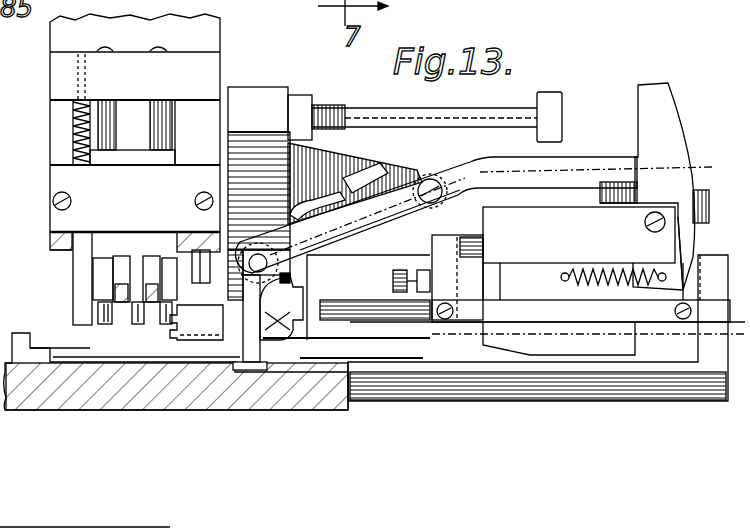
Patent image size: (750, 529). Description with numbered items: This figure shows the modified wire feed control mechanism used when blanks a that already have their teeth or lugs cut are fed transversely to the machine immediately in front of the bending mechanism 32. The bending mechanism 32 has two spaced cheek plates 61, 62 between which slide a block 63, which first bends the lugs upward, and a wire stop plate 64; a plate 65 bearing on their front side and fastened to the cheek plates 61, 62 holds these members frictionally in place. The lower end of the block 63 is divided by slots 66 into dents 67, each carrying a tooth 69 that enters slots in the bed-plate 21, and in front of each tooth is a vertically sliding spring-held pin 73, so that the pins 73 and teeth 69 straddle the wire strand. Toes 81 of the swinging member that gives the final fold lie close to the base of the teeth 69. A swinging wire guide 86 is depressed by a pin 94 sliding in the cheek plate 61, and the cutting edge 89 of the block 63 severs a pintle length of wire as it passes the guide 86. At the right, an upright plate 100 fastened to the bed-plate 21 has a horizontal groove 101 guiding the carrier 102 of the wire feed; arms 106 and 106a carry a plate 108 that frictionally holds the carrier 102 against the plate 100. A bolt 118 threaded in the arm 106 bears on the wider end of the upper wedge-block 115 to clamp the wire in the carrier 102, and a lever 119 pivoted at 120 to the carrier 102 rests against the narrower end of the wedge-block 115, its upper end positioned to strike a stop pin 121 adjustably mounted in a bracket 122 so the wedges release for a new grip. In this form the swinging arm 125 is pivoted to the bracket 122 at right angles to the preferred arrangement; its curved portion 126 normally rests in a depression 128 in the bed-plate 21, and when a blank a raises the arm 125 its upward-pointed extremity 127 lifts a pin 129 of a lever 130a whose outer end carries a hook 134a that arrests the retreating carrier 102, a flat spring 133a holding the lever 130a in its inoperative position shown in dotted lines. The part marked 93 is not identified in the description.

The bending mechanism 32 is at (114, 123).
The cheek plate 62 is at (55, 127).
The plunger guides 93 is at (160, 125).
The cheek plate 61 is at (197, 132).
The plate 65 is at (133, 188).
The block 63 is at (95, 242).
The wire stop plate 64 is at (75, 268).
The dents 67 is at (100, 287).
The slots 66 is at (166, 262).
The toes 81 is at (120, 285).
The cutting edge 89 is at (155, 290).
The tooth 69 is at (115, 318).
The vertically sliding pin 73 is at (163, 318).
The swinging wire guide 86 is at (196, 322).
The bed-plate 21 is at (176, 371).
The blank a is at (65, 350).
The depression 128 is at (262, 368).
The bracket 122 is at (259, 193).
The stop pin 121 is at (378, 107).
The pin 129 is at (295, 244).
The lever 130a is at (404, 200).
The flat spring 133a is at (310, 205).
The pin 94 is at (212, 288).
The curved portion 126 is at (262, 350).
The extremity 127 is at (296, 280).
The swinging arm 125 is at (346, 308).
The bolt 118 is at (405, 270).
The horizontal groove 101 is at (425, 318).
The arm 106 is at (450, 245).
The carrier 102 is at (579, 235).
The pivot 120 is at (645, 230).
The upper wedge-block 115 is at (485, 288).
The plate 108 is at (581, 309).
The arm 106a is at (700, 290).
The upright plate 100 is at (546, 328).
The lever 119 is at (668, 108).
The hook 134a is at (712, 190).